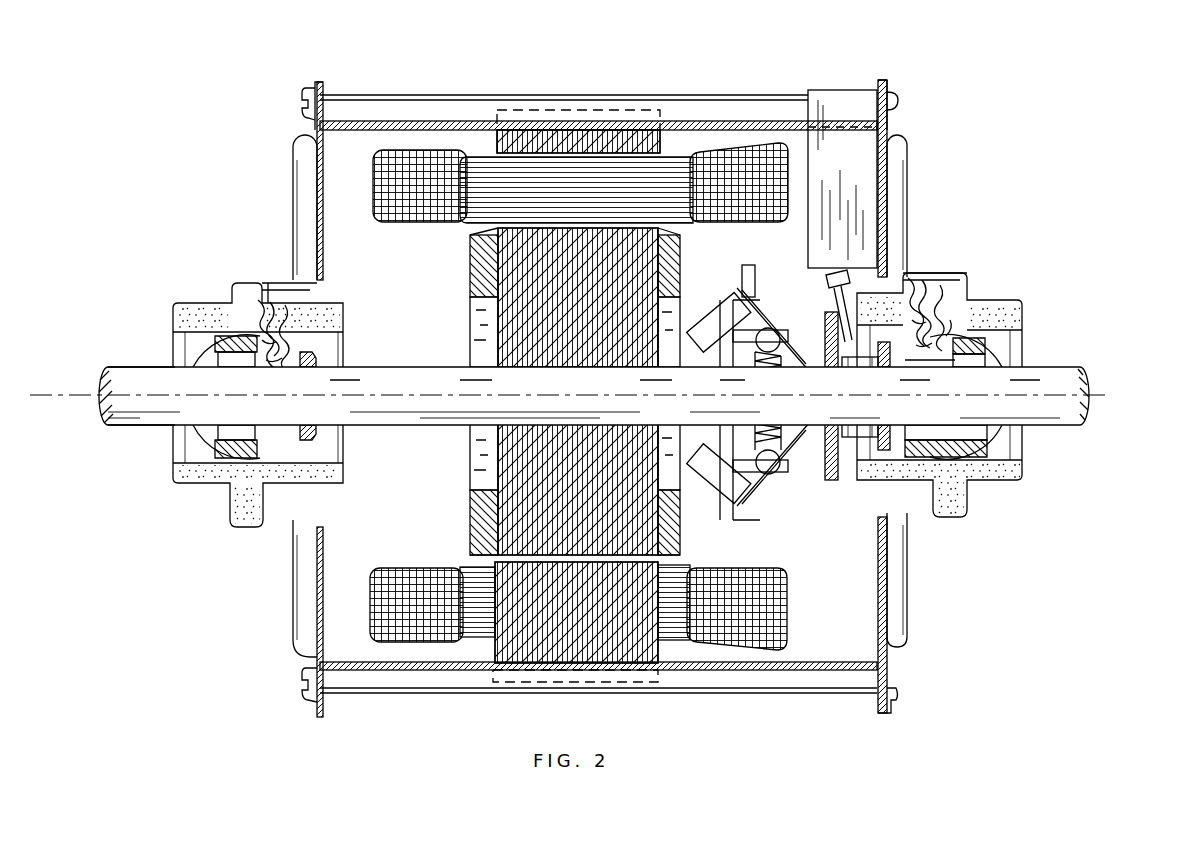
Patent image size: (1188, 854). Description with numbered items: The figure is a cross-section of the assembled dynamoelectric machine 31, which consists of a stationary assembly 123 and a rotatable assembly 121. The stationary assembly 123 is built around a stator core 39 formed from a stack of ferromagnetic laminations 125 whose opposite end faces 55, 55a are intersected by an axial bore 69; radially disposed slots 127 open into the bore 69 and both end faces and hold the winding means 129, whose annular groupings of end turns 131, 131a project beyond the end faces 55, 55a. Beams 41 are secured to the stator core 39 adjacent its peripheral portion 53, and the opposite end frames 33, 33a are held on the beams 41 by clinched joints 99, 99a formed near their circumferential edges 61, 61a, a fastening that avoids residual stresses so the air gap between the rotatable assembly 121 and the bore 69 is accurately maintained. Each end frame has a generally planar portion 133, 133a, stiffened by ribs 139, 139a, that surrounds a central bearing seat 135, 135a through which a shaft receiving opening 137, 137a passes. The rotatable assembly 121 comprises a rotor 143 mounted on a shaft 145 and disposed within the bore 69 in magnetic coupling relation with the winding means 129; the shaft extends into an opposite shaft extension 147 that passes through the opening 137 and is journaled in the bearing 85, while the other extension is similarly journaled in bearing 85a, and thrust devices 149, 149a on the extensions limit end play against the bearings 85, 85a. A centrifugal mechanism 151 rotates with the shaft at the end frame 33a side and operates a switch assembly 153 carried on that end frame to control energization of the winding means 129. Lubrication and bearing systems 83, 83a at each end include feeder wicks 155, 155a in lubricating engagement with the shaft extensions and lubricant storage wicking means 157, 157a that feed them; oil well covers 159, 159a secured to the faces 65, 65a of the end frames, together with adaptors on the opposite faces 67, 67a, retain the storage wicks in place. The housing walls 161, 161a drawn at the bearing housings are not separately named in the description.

The dynamoelectric machine 31 is at (222, 68).
The end frame 33 is at (300, 162).
The opposite end frame 33a is at (905, 164).
The stator core 39 is at (582, 610).
The beams 41 is at (403, 97).
The peripheral portion 53 is at (538, 110).
The end face 55 is at (490, 648).
The opposite end face 55a is at (663, 650).
The circumferential edge 61 is at (320, 82).
The circumferential edge 61a is at (880, 80).
The face of end frame 65 is at (296, 379).
The face of end frame 65a is at (877, 613).
The opposite face of end frame 67 is at (310, 194).
The opposite face of end frame 67a is at (883, 597).
The bore 69 is at (575, 227).
The lubrication and bearing system 83 is at (239, 400).
The lubrication and bearing system 83a is at (975, 386).
The bearing 85 is at (233, 360).
The bearing 85a is at (957, 350).
The clinched joints 99 is at (304, 92).
The clinched joints 99a is at (895, 94).
The rotatable assembly 121 is at (531, 391).
The stationary assembly 123 is at (908, 381).
The ferromagnetic laminations 125 is at (538, 664).
The winding means accommodating slots 127 is at (593, 130).
The winding means 129 is at (578, 390).
The end turns 131 is at (418, 223).
The end turns 131a is at (740, 212).
The generally planar portion 133 is at (313, 227).
The generally planar portion 133a is at (887, 203).
The bearing seat 135 is at (210, 427).
The bearing seat 135a is at (980, 431).
The shaft receiving opening 137 is at (195, 365).
The shaft receiving opening 137a is at (1000, 357).
The ribs 139 is at (293, 572).
The ribs 139a is at (907, 571).
The rotor 143 is at (620, 422).
The shaft 145 is at (590, 391).
The shaft extension 147 is at (98, 378).
The thrust device 149 is at (312, 364).
The thrust device 149a is at (887, 413).
The centrifugal mechanism 151 is at (716, 511).
The switch assembly 153 is at (860, 171).
The feeder wick 155 is at (257, 280).
The feeder wick 155a is at (937, 290).
The lubricant storage wicking means 157 is at (188, 470).
The lubricant storage wicking means 157a is at (1020, 470).
The oil well cover 159 is at (178, 307).
The oil well cover 159a is at (1020, 305).
The housing wall 161 is at (195, 487).
The housing wall 161a is at (1012, 481).